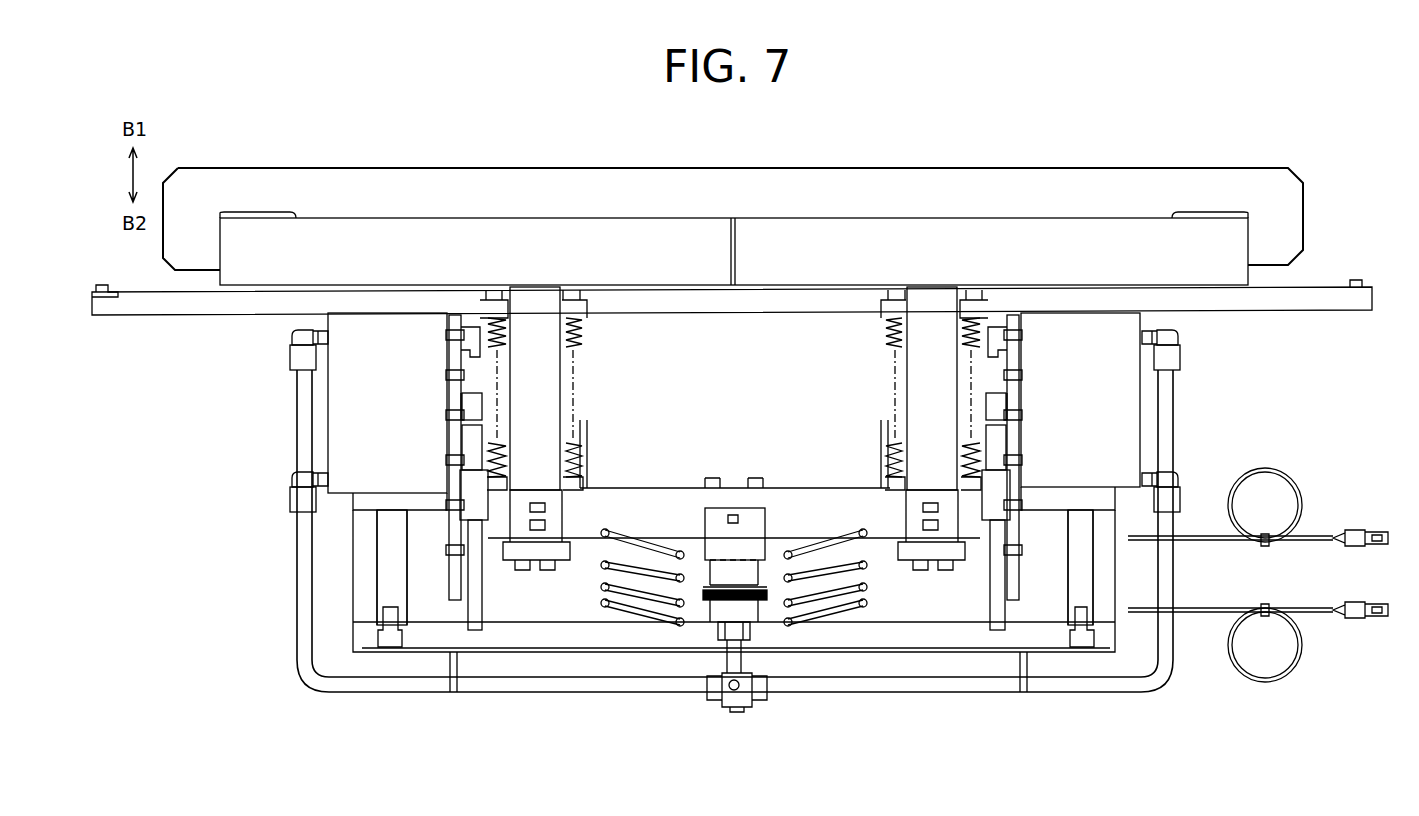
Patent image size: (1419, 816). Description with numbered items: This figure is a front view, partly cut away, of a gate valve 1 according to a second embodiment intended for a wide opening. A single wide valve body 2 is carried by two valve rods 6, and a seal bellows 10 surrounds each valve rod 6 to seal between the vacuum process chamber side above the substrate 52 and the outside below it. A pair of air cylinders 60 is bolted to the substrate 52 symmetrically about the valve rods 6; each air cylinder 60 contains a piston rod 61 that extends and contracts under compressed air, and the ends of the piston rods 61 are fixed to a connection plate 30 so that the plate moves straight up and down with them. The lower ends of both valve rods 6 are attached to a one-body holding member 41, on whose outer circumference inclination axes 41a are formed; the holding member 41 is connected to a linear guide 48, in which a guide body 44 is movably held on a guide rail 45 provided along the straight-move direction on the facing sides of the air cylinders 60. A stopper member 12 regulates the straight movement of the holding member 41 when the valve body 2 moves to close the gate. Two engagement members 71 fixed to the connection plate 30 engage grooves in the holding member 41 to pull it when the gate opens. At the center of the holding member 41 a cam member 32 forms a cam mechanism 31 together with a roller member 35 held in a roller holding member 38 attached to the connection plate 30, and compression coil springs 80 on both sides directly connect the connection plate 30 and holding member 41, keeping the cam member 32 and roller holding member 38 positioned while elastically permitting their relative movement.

The gate valve 1 is at (1200, 143).
The valve body 2 is at (1030, 188).
The valve rod 6 is at (565, 383).
The seal bellows 10 is at (578, 348).
The stopper member 12 is at (462, 343).
The connection plate 30 is at (833, 640).
The cam mechanism 31 is at (781, 521).
The cam member 32 is at (700, 500).
The roller member 35 is at (718, 600).
The roller holding member 38 is at (750, 612).
The holding member 41 is at (818, 490).
The inclination axis 41a is at (470, 440).
The guide body 44 is at (462, 410).
The guide rail 45 is at (450, 512).
The linear guide 48 is at (477, 407).
The substrate 52 is at (1268, 300).
The air cylinder 60 is at (352, 432).
The piston rod 61 is at (395, 563).
The engagement member 71 is at (483, 600).
The compression coil spring 80 is at (606, 586).